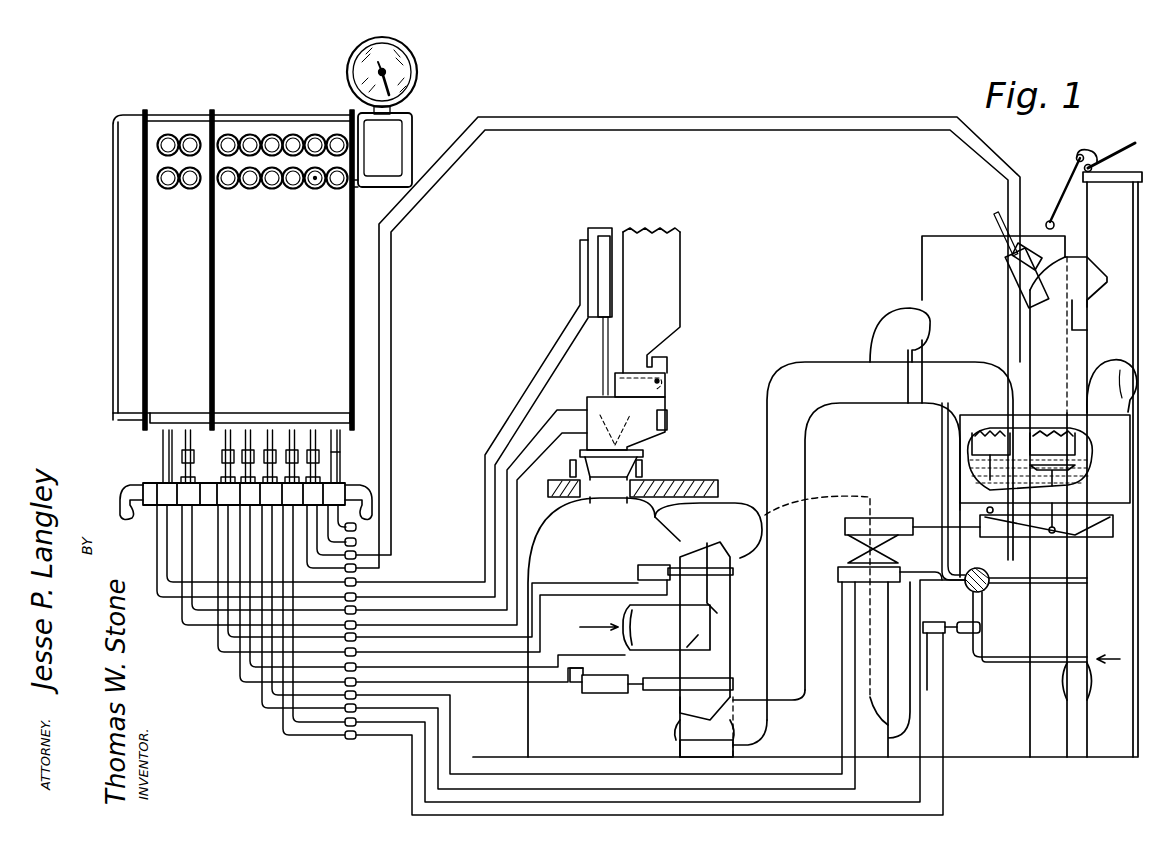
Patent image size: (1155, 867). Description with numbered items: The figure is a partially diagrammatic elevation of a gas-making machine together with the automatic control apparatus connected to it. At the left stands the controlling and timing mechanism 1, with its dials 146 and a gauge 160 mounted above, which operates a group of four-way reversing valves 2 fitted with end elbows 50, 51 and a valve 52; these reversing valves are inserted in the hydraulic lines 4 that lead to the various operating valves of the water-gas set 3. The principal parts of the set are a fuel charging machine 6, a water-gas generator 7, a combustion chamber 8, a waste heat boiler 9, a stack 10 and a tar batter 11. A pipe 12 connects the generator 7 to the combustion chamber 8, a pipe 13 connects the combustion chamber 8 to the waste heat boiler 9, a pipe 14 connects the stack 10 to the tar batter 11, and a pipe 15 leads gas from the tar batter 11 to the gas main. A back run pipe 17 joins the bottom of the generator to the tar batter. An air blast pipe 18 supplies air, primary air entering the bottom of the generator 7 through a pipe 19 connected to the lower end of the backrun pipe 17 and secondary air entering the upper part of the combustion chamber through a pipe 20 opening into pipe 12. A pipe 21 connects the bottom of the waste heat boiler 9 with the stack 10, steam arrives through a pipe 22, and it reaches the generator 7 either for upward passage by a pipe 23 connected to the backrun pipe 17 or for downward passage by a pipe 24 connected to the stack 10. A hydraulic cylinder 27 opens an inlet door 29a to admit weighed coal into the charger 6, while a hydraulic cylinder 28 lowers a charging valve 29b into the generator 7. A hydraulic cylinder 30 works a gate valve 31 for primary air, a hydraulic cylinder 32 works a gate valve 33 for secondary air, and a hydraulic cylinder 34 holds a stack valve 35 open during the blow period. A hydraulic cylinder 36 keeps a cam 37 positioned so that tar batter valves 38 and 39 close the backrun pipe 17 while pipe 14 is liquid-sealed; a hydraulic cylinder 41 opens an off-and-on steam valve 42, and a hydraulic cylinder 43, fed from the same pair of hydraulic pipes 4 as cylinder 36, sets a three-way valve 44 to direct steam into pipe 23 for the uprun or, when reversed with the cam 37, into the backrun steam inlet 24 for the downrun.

The controlling and timing mechanism 1 is at (107, 374).
The four-way reversing valves 2 is at (143, 480).
The water-gas set 3 is at (746, 474).
The hydraulic lines 4 is at (490, 704).
The fuel charging machine 6 is at (662, 382).
The water-gas generator 7 is at (568, 528).
The combustion chamber 8 is at (828, 510).
The waste heat boiler 9 is at (947, 242).
The stack 10 is at (1085, 232).
The tar batter 11 is at (975, 497).
The pipe 12 is at (728, 508).
The pipe 13 is at (890, 325).
The pipe 14 is at (1028, 350).
The pipe 15 is at (1108, 380).
The back run pipe 17 is at (812, 364).
The air blast pipe 18 is at (622, 608).
The primary air pipe 19 is at (718, 661).
The secondary air pipe 20 is at (718, 596).
The pipe 21 is at (1060, 695).
The steam supply pipe 22 is at (1028, 660).
The steam pipe 23 is at (944, 403).
The backrun steam inlet pipe 24 is at (1038, 584).
The hydraulic cylinder 27 is at (668, 421).
The hydraulic cylinder 28 is at (590, 270).
The inlet door 29a is at (660, 380).
The charging valve 29b is at (632, 456).
The hydraulic cylinder 30 is at (596, 693).
The gate valve 31 is at (666, 690).
The hydraulic cylinder 32 is at (638, 572).
The gate valve 33 is at (673, 567).
The hydraulic cylinder 34 is at (1010, 302).
The stack valve 35 is at (1104, 150).
The hydraulic cylinder 36 is at (845, 528).
The cam 37 is at (1028, 538).
The tar batter valve 38 is at (998, 458).
The tar batter valve 39 is at (1070, 480).
The hydraulic cylinder 41 is at (935, 645).
The off-and-on steam valve 42 is at (980, 630).
The hydraulic cylinder 43 is at (840, 588).
The three-way valve 44 is at (968, 590).
The manifold elbow 50 is at (120, 497).
The manifold elbow 51 is at (374, 503).
The valve 52 is at (343, 453).
The dials 146 is at (316, 189).
The pressure gauge 160 is at (412, 76).